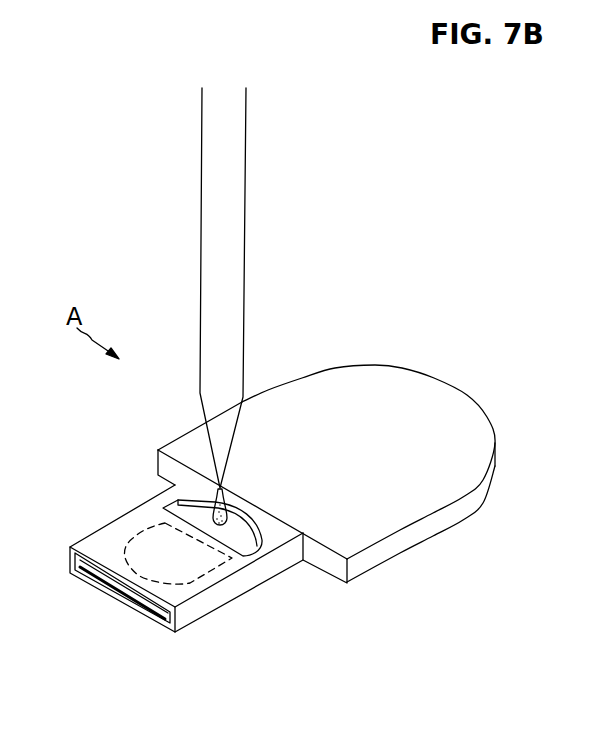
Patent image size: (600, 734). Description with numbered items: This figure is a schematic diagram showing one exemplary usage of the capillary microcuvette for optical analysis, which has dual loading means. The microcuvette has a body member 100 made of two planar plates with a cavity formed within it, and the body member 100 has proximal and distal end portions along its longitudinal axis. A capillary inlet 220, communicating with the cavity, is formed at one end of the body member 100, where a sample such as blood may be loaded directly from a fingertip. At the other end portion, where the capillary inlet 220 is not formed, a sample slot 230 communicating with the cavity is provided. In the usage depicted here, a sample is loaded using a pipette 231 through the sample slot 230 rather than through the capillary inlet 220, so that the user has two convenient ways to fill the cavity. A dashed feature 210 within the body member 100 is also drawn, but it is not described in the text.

The body member 100 is at (255, 586).
The channel 210 is at (150, 550).
The capillary inlet 220 is at (155, 602).
The sample slot 230 is at (237, 530).
The pipette 231 is at (232, 213).